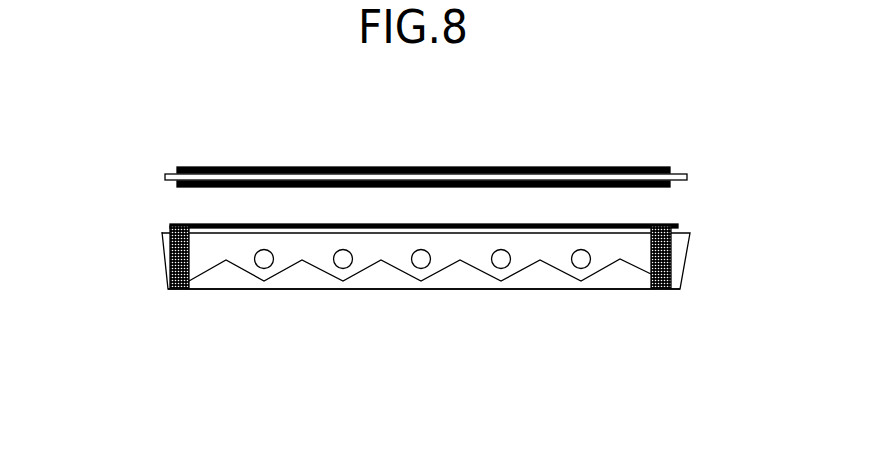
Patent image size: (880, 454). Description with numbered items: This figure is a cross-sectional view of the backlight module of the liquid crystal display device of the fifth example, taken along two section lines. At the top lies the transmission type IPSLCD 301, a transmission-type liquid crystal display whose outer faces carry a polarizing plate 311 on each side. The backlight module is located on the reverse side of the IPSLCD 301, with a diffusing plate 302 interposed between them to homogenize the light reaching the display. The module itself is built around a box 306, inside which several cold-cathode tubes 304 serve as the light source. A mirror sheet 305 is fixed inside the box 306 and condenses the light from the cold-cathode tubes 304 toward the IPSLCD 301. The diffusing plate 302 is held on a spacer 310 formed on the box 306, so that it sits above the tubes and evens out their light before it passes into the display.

The transmission type IPSLCD 301 is at (175, 176).
The polarizing plate 311 is at (278, 167).
The diffusing plate 302 is at (640, 228).
The spacer 310 is at (168, 273).
The cold-cathode tube 304 is at (265, 266).
The mirror sheet 305 is at (613, 263).
The box 306 is at (402, 290).